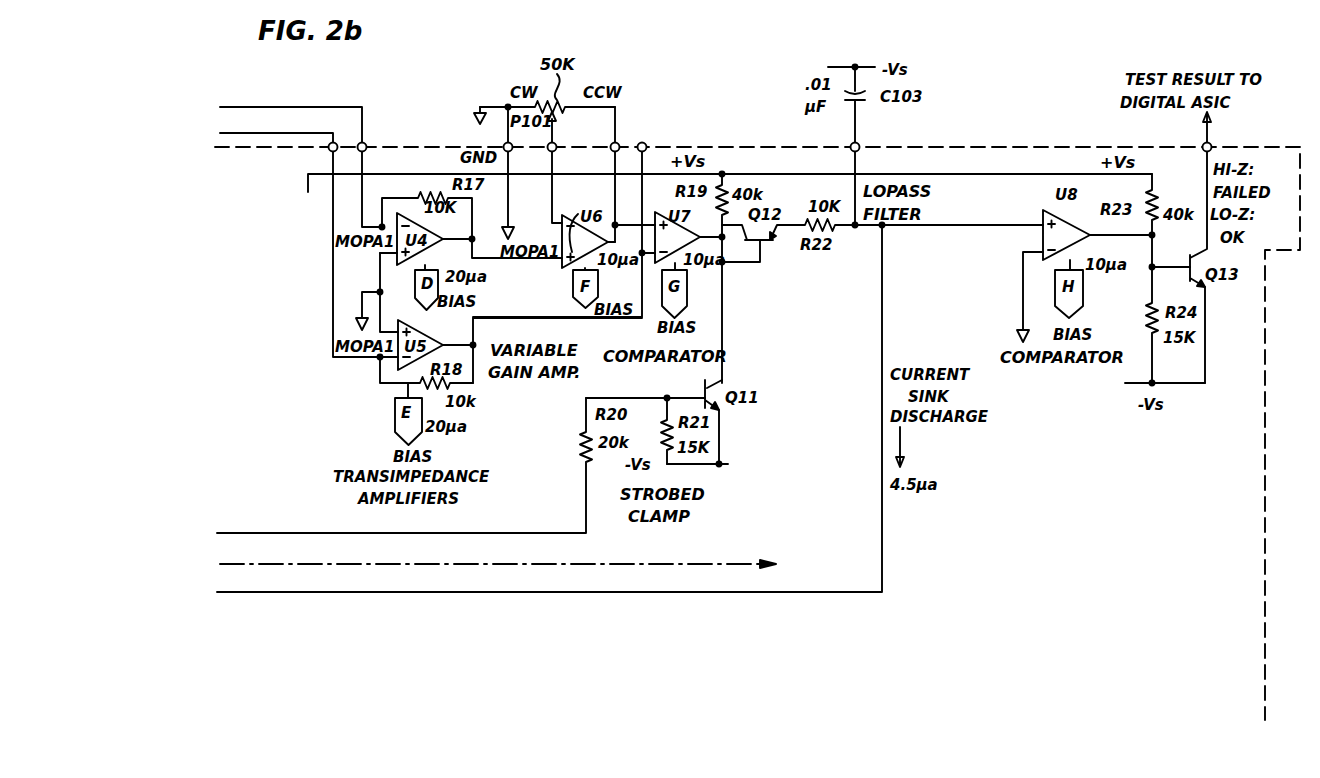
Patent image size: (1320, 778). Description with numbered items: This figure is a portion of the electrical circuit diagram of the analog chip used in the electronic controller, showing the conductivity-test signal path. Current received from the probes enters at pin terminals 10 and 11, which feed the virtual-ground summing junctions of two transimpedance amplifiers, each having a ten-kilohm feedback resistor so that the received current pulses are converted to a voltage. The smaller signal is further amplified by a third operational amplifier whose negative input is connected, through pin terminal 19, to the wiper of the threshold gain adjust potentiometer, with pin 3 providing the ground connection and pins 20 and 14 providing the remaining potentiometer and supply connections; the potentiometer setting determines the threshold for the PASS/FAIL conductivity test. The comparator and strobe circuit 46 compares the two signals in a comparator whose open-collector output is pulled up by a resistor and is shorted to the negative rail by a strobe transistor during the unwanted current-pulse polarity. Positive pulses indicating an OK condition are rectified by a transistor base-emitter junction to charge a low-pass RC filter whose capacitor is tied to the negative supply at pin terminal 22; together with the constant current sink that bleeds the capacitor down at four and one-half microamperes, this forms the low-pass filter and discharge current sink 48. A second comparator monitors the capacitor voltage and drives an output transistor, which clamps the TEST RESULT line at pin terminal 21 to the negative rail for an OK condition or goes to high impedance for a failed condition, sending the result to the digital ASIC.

The ground terminal 3 is at (502, 173).
The input terminal 10 is at (305, 167).
The input terminal 11 is at (300, 239).
The terminal 14 is at (576, 218).
The potentiometer wiper terminal 19 is at (564, 167).
The terminal 20 is at (625, 174).
The test result output terminal 21 is at (1216, 247).
The capacitor terminal 22 is at (859, 145).
The comparator and strobe circuit 46 is at (735, 376).
The low-pass filter and discharge current sink 48 is at (903, 272).